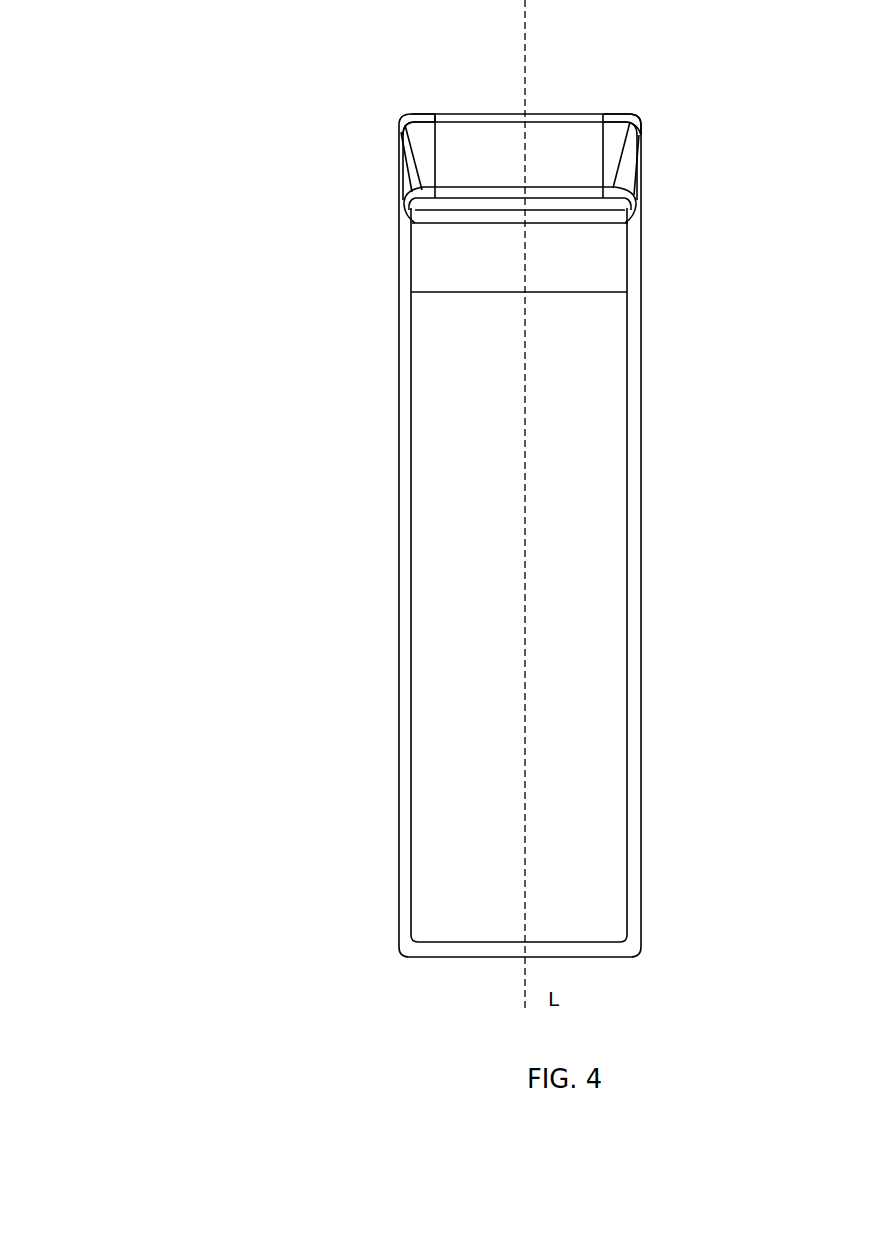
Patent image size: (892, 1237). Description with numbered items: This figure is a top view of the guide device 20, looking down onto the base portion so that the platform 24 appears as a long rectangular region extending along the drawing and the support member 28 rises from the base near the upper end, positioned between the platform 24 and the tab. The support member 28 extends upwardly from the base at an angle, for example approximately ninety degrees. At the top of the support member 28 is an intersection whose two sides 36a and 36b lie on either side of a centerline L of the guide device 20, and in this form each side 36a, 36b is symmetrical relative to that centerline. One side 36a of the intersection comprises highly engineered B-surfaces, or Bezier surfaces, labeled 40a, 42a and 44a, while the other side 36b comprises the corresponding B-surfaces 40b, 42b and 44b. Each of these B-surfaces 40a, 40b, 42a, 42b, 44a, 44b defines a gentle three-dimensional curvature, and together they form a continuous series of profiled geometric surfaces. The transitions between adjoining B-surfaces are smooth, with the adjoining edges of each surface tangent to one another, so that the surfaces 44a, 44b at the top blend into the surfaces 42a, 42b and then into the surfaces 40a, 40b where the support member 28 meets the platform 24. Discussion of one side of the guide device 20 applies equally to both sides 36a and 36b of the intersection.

The guide device 20 is at (247, 44).
The platform 24 is at (398, 672).
The support member 28 is at (438, 211).
The side of the intersection 36a is at (567, 100).
The side of the intersection 36b is at (464, 100).
The B-surface 40a is at (635, 193).
The B-surface 40b is at (405, 193).
The B-surface 42a is at (630, 168).
The B-surface 42b is at (408, 168).
The B-surface 44a is at (615, 138).
The B-surface 44b is at (420, 140).